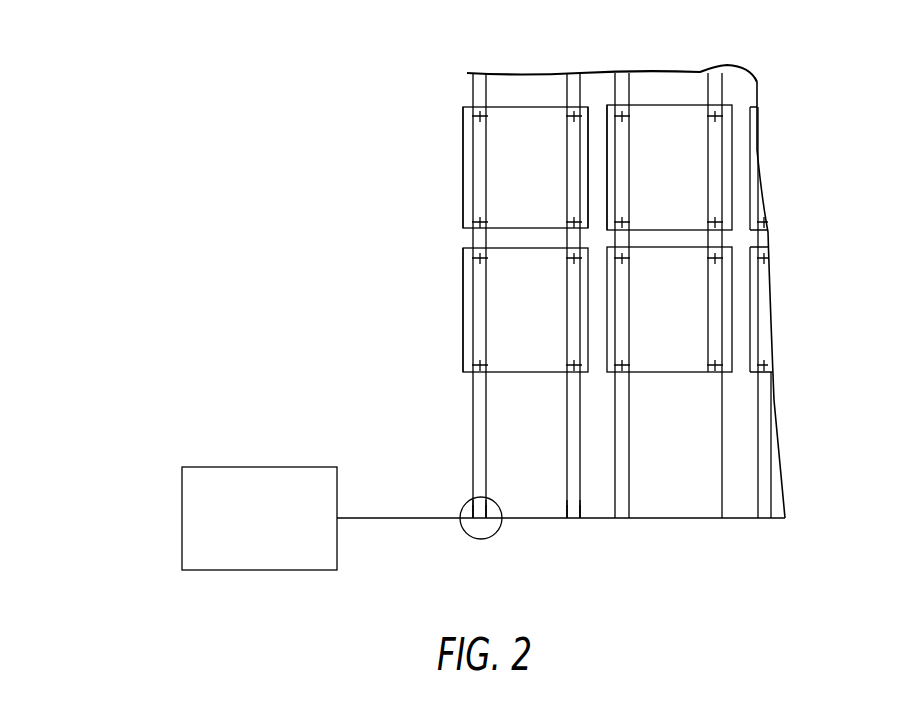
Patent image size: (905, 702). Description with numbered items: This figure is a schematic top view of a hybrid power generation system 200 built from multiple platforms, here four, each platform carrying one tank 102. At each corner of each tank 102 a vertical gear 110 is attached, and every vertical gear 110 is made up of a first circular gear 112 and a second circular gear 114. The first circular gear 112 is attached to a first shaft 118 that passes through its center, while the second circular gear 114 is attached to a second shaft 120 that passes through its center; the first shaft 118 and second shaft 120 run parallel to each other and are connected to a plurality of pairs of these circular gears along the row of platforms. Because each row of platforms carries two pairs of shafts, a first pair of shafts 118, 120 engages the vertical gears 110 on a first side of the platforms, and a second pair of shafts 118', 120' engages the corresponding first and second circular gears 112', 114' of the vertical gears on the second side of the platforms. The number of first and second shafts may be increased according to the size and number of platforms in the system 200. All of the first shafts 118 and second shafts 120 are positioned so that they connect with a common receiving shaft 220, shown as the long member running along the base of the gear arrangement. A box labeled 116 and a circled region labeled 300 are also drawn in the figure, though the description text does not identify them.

The tank 102 is at (530, 328).
The vertical gear 110 is at (475, 381).
The first circular gear 112 is at (429, 200).
The first circular gear 112' is at (557, 130).
The second circular gear 114 is at (620, 185).
The second circular gear 114' is at (609, 131).
The control unit 116 is at (272, 467).
The first shaft 118 is at (423, 535).
The first shaft 118' is at (574, 546).
The second shaft 120 is at (507, 545).
The second shaft 120' is at (628, 536).
The hybrid power generation system 200 is at (145, 452).
The receiving shaft 220 is at (693, 519).
The sensor 300 is at (470, 533).